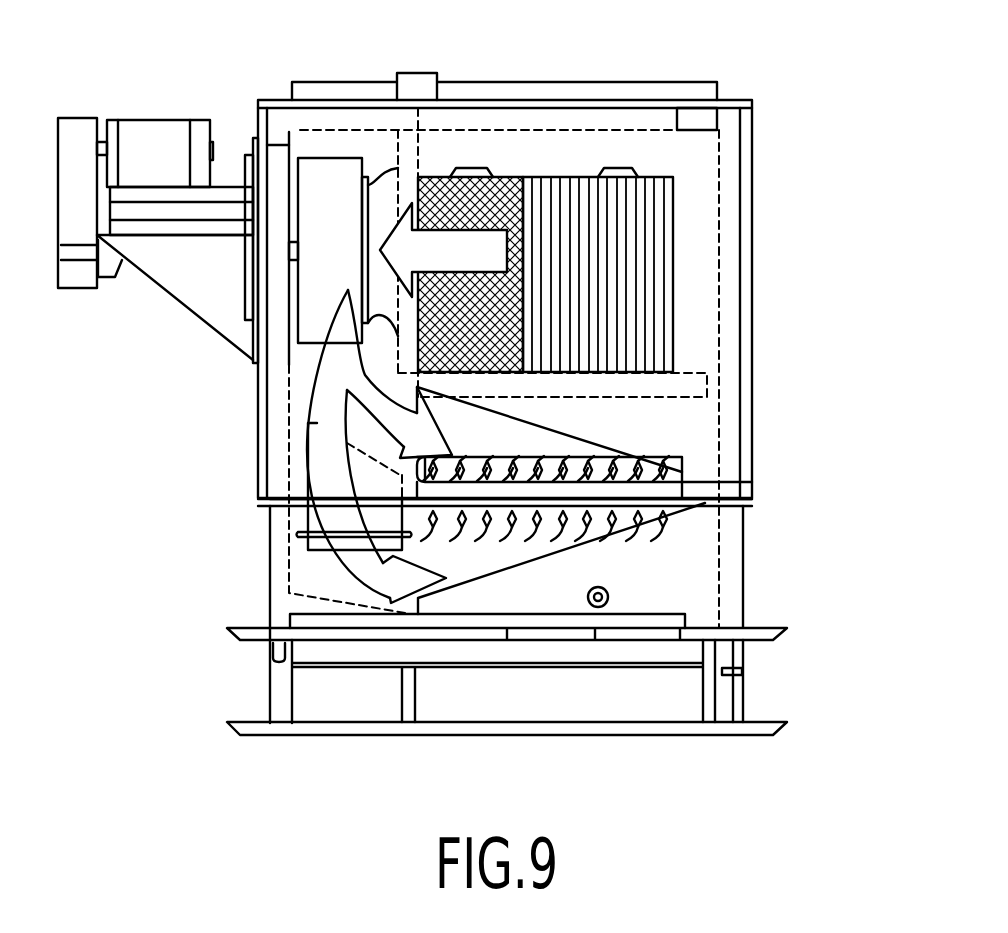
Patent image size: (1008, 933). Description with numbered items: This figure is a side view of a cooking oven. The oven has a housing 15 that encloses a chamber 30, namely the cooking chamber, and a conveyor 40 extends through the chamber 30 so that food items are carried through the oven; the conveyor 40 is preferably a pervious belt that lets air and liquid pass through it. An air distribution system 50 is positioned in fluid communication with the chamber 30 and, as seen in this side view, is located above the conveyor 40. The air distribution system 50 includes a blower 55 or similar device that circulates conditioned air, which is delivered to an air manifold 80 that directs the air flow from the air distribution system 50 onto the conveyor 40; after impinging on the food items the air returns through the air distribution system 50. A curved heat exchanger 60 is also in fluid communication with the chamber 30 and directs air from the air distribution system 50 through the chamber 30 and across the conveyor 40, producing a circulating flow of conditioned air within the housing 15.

The housing 15 is at (727, 295).
The chamber 30 is at (655, 497).
The conveyor 40 is at (685, 507).
The air distribution system 50 is at (172, 285).
The blower 55 is at (308, 168).
The curved heat exchanger 60 is at (673, 198).
The air manifold 80 is at (548, 436).